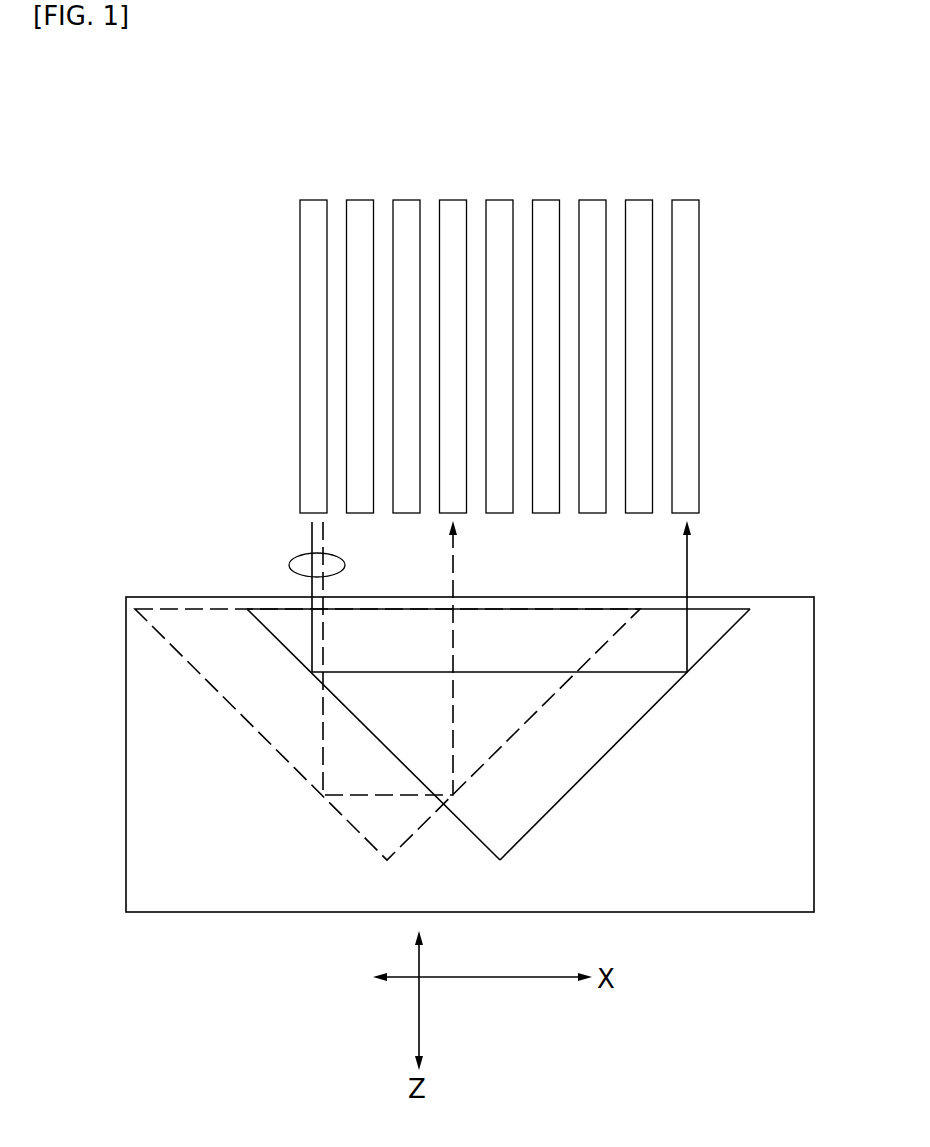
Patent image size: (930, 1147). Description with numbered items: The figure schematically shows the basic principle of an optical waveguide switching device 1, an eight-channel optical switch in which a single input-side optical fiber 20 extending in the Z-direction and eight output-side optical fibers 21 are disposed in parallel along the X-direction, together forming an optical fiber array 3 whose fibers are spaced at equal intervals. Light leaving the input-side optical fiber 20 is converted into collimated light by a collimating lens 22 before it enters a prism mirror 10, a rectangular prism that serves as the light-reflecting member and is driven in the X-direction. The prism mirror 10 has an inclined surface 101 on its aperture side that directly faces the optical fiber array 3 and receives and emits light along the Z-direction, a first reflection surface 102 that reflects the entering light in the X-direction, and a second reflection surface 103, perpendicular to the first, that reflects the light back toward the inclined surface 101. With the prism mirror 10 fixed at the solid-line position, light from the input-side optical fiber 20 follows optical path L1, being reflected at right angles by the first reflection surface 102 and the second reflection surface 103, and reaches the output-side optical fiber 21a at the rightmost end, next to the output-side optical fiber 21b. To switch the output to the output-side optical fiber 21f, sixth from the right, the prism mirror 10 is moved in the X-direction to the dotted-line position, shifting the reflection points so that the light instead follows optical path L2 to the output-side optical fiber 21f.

The optical waveguide switching device 1 is at (845, 752).
The optical fiber array 3 is at (748, 344).
The prism mirror 10 is at (605, 780).
The input-side optical fiber 20 is at (300, 385).
The output-side optical fibers 21 is at (693, 116).
The output-side optical fiber 21a is at (687, 199).
The output-side optical fiber 21b is at (640, 199).
The output-side optical fiber 21f is at (450, 199).
The collimating lens 22 is at (289, 562).
The inclined surface 101 is at (657, 603).
The first reflection surface 102 is at (292, 658).
The second reflection surface 103 is at (633, 728).
The optical path L1 is at (633, 673).
The optical path L2 is at (322, 747).